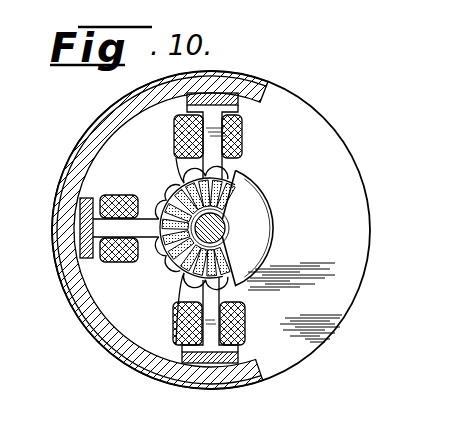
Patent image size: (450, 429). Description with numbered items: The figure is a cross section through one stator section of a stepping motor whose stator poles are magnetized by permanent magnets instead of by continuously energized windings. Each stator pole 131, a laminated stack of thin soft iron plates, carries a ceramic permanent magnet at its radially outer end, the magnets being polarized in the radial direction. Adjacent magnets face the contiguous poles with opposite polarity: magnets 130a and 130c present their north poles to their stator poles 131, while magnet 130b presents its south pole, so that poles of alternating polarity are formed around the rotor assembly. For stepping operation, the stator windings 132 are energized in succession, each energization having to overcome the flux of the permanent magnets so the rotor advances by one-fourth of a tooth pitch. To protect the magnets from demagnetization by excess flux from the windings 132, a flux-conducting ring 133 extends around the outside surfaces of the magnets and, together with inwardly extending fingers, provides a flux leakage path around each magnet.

The ceramic permanent magnet 130a is at (205, 79).
The ceramic permanent magnet 130b is at (82, 255).
The ceramic permanent magnet 130c is at (192, 362).
The stator pole 131 is at (240, 127).
The stator winding 132 is at (173, 127).
The flux-conducting ring 133 is at (88, 318).